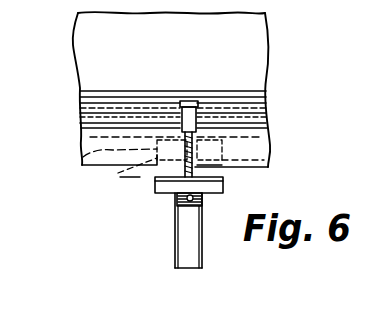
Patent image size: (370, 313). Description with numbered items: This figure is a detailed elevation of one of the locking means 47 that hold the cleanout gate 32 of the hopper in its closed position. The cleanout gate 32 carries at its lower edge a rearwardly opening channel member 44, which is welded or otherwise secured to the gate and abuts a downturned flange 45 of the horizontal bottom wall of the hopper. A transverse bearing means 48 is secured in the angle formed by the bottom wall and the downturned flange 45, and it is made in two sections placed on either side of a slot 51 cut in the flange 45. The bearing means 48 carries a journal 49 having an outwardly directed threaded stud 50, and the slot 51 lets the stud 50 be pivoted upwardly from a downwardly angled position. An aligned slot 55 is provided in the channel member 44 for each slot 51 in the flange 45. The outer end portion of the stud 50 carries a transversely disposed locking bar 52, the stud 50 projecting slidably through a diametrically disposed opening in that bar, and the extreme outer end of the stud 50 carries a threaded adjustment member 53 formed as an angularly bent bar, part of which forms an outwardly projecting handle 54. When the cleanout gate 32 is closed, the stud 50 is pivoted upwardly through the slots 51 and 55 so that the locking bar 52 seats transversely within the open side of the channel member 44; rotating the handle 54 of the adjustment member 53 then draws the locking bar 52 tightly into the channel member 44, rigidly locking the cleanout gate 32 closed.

The cleanout gate 32 is at (258, 38).
The channel member 44 is at (259, 105).
The downturned flange 45 is at (261, 149).
The locking means 47 is at (182, 273).
The bearing means 48 is at (130, 168).
The journal 49 is at (73, 155).
The threaded stud 50 is at (212, 170).
The slot 51 is at (188, 134).
The locking bar 52 is at (155, 188).
The adjustment member 53 is at (177, 194).
The handle 54 is at (183, 243).
The slot 55 is at (190, 101).